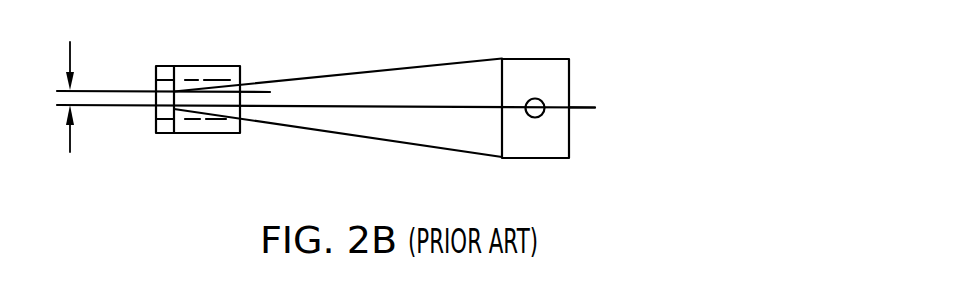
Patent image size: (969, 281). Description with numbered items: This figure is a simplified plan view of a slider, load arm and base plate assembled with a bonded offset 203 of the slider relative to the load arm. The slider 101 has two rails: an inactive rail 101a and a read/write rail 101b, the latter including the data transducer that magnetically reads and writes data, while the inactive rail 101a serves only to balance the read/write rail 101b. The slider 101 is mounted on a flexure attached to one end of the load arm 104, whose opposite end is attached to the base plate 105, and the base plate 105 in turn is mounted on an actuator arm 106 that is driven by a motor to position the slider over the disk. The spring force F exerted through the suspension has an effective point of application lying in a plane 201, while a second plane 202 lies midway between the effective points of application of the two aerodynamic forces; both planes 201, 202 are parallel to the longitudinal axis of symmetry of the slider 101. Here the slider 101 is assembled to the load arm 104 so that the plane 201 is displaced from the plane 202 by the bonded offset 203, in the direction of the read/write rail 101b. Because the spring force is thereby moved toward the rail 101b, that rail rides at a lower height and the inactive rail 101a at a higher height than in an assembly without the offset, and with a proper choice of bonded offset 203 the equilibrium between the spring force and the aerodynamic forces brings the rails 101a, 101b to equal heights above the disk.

The slider 101 is at (156, 116).
The inactive rail 101a is at (193, 72).
The read/write rail 101b is at (198, 122).
The load arm 104 is at (453, 153).
The base plate 105 is at (569, 72).
The actuator arm 106 is at (544, 104).
The plane 201 is at (578, 110).
The plane 202 is at (133, 90).
The bonded offset 203 is at (55, 102).